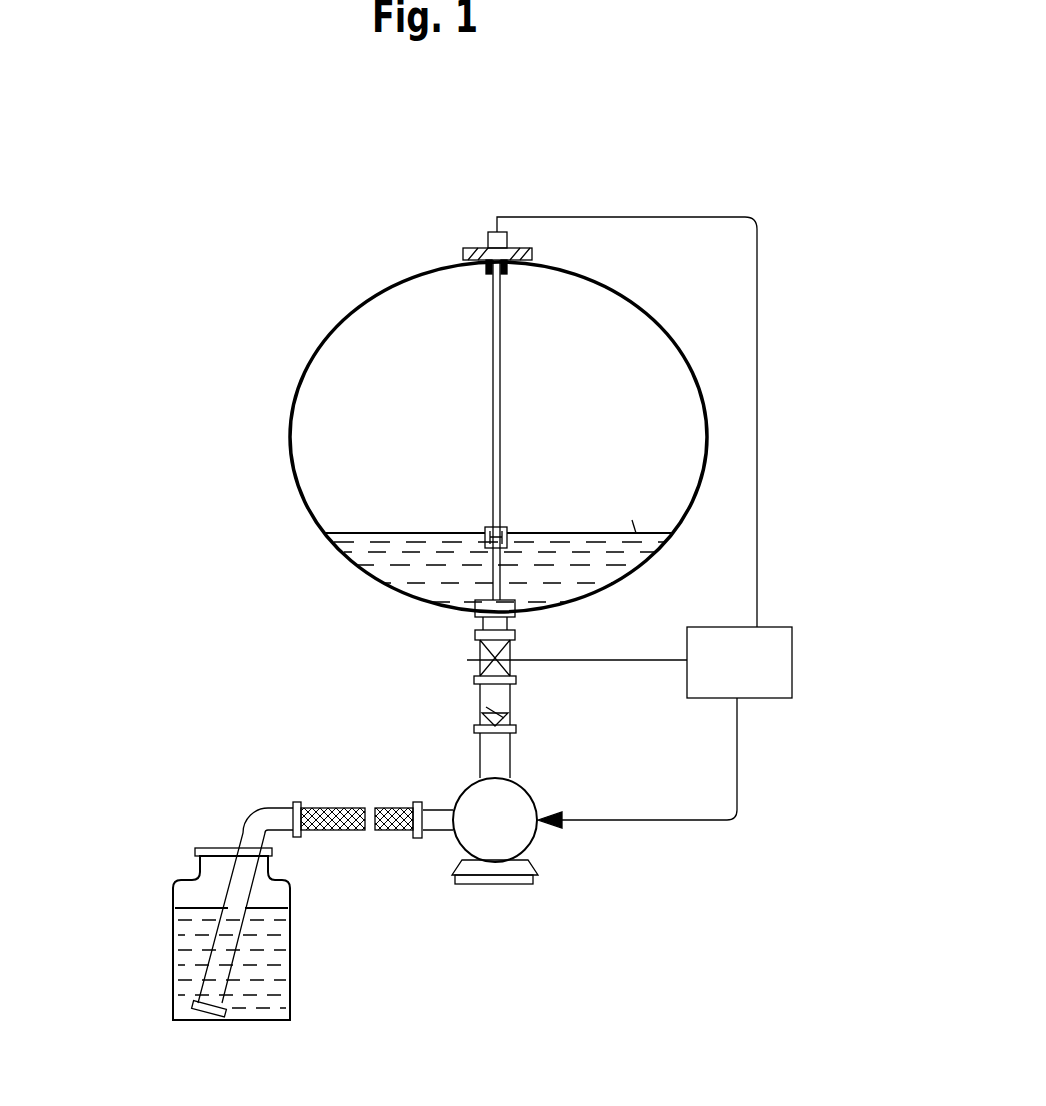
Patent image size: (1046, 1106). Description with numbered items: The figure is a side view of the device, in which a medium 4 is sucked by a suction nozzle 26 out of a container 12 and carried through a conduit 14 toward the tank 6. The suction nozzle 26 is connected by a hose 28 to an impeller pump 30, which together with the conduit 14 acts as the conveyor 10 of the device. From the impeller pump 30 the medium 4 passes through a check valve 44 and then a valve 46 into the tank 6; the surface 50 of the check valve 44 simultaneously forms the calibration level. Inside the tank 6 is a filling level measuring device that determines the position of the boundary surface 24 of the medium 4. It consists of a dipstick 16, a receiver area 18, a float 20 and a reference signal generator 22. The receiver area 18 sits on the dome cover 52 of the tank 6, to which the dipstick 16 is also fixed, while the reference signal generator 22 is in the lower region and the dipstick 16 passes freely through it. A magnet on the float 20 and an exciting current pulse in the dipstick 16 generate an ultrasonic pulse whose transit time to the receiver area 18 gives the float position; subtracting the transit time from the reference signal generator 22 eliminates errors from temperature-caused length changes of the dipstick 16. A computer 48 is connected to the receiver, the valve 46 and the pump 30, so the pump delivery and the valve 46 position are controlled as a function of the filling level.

The medium 4 is at (342, 556).
The tank 6 is at (296, 396).
The conveyor 10 is at (558, 850).
The container 12 is at (176, 986).
The conduit 14 is at (348, 855).
The dipstick 16 is at (495, 352).
The receiver area 18 is at (500, 237).
The float 20 is at (507, 535).
The reference signal generator 22 is at (478, 618).
The boundary surface 24 is at (636, 533).
The suction nozzle 26 is at (252, 832).
The hose 28 is at (323, 838).
The impeller pump 30 is at (497, 842).
The check valve 44 is at (500, 718).
The valve 46 is at (467, 660).
The computer 48 is at (778, 643).
The surface 50 is at (490, 710).
The dome cover 52 is at (460, 247).